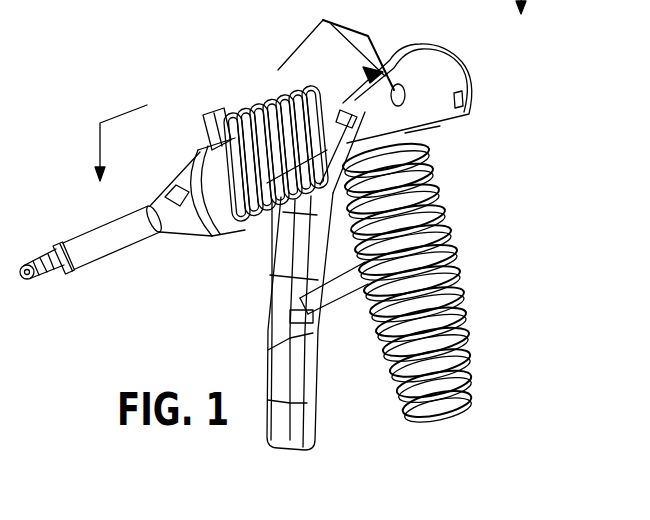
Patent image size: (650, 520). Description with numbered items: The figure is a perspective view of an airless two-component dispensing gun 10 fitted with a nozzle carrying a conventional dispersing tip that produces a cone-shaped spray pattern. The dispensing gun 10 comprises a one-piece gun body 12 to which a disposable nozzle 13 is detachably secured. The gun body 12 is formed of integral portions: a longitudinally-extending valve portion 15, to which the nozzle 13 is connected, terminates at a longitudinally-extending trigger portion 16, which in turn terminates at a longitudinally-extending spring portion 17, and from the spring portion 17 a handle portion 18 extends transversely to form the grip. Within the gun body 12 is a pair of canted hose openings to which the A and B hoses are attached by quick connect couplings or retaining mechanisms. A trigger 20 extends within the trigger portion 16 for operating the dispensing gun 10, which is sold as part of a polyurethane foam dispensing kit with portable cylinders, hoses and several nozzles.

The dispensing gun 10 is at (465, 230).
The gun body 12 is at (247, 78).
The disposable nozzle 13 is at (125, 247).
The valve portion 15 is at (248, 212).
The trigger portion 16 is at (357, 150).
The spring portion 17 is at (440, 87).
The handle portion 18 is at (468, 315).
The trigger 20 is at (260, 336).